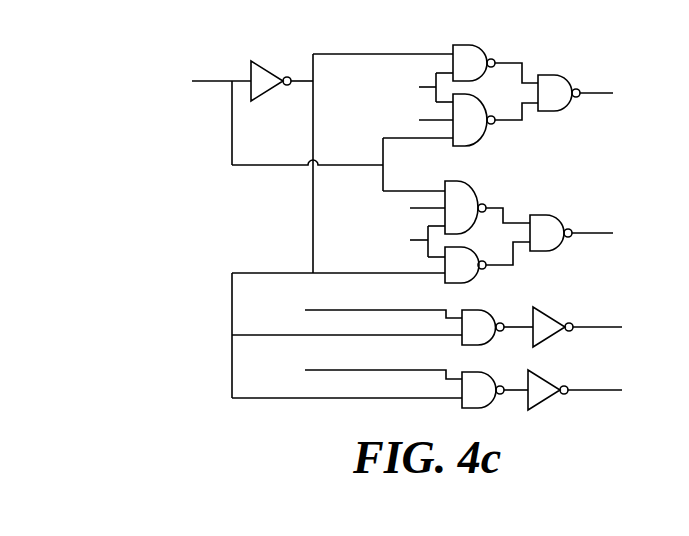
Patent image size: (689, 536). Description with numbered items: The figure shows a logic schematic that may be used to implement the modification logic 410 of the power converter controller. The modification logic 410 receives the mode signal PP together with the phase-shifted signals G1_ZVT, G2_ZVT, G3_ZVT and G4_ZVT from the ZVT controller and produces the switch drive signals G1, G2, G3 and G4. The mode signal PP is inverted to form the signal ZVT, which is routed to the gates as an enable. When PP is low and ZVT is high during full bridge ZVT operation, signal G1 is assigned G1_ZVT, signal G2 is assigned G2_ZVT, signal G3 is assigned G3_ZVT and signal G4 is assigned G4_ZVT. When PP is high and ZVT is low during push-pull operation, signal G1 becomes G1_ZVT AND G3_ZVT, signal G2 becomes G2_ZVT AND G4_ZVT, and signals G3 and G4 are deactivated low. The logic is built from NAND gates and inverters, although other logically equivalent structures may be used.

The modification logic 410 is at (95, 86).
The mode signal PP is at (210, 115).
The signal ZVT is at (342, 214).
The signal G1 is at (489, 95).
The signal G2 is at (486, 232).
The signal G3 is at (427, 316).
The signal G4 is at (427, 378).